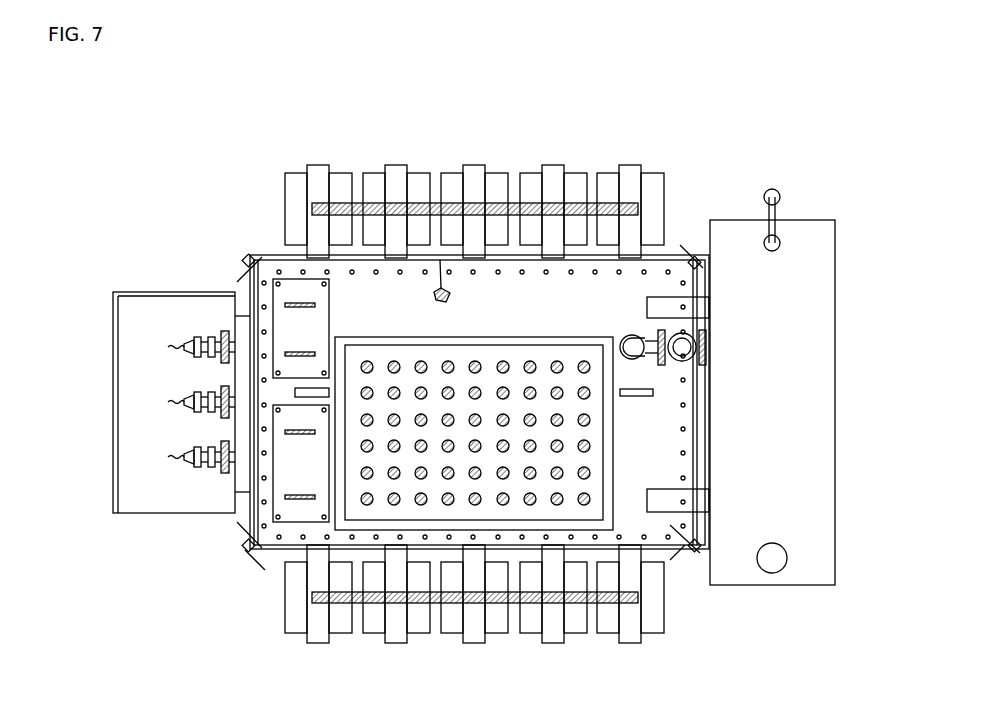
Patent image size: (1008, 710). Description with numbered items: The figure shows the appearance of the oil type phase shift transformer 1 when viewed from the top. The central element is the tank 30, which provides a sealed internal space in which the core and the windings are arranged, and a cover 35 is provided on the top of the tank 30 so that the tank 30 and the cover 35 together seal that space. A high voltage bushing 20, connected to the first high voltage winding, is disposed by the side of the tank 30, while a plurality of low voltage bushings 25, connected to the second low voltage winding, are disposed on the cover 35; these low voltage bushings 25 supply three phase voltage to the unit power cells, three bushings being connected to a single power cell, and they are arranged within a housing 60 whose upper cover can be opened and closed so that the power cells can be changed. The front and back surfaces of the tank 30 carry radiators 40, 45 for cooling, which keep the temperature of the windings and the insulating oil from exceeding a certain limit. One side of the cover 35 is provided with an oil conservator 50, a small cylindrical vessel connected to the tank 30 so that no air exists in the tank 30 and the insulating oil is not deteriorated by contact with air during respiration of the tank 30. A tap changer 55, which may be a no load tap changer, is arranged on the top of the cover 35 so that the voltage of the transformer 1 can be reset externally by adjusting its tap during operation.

The oil type phase shift transformer 1 is at (722, 150).
The high voltage bushing 20 is at (168, 457).
The low voltage bushings 25 is at (333, 497).
The tank 30 is at (247, 292).
The cover 35 is at (357, 300).
The radiator 40 is at (298, 204).
The radiator 45 is at (298, 601).
The oil conservator 50 is at (818, 409).
The tap changer 55 is at (441, 288).
The housing 60 is at (525, 337).